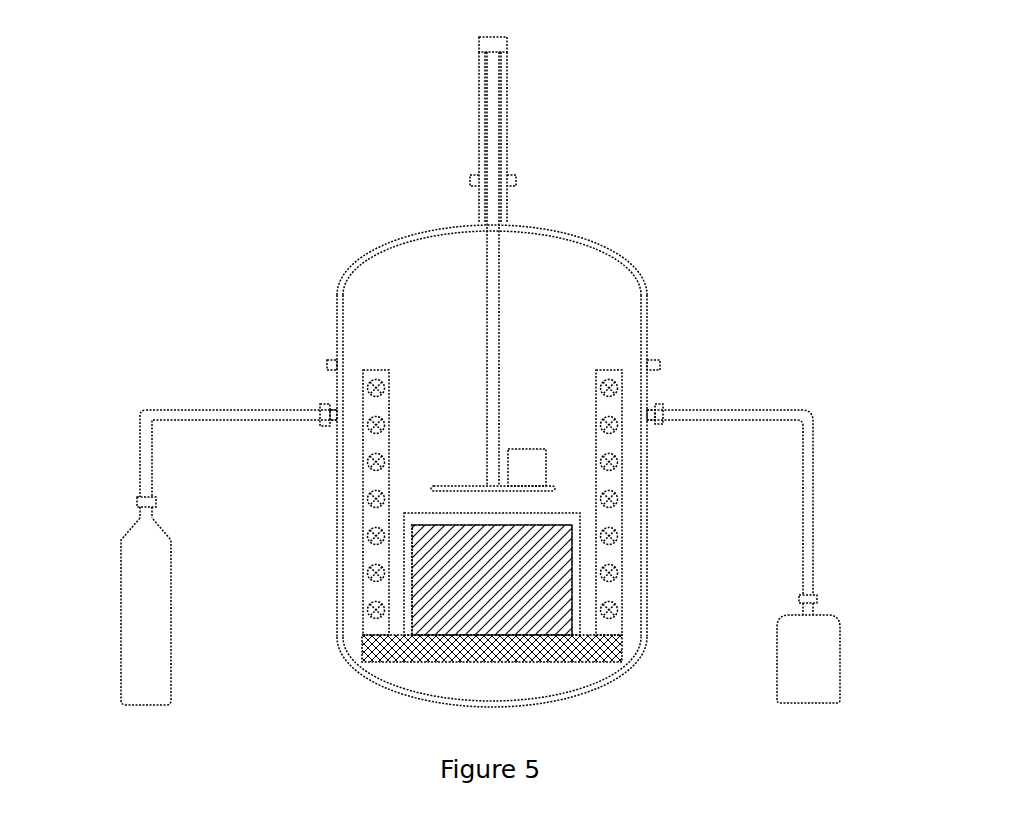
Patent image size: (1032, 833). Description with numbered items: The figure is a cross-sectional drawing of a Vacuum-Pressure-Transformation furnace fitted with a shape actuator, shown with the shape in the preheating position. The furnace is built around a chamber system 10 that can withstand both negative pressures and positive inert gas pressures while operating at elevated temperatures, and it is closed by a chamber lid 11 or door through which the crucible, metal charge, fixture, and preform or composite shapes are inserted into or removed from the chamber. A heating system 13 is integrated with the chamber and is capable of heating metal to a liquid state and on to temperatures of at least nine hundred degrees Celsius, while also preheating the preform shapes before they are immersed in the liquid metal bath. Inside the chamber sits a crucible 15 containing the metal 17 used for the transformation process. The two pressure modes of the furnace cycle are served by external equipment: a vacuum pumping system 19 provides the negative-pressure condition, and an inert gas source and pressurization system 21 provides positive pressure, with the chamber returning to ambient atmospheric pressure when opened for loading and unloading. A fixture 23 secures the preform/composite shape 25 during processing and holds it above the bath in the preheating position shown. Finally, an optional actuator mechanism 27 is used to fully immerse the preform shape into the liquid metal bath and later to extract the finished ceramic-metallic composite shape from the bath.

The chamber system 10 is at (336, 492).
The chamber lid 11 is at (378, 243).
The heating system 13 is at (370, 366).
The crucible 15 is at (583, 520).
The metal 17 is at (551, 588).
The vacuum pumping system 19 is at (830, 612).
The inert gas source and pressurization system 21 is at (123, 527).
The fixture 23 is at (500, 268).
The preform/composite shape 25 is at (524, 446).
The actuator mechanism 27 is at (473, 101).